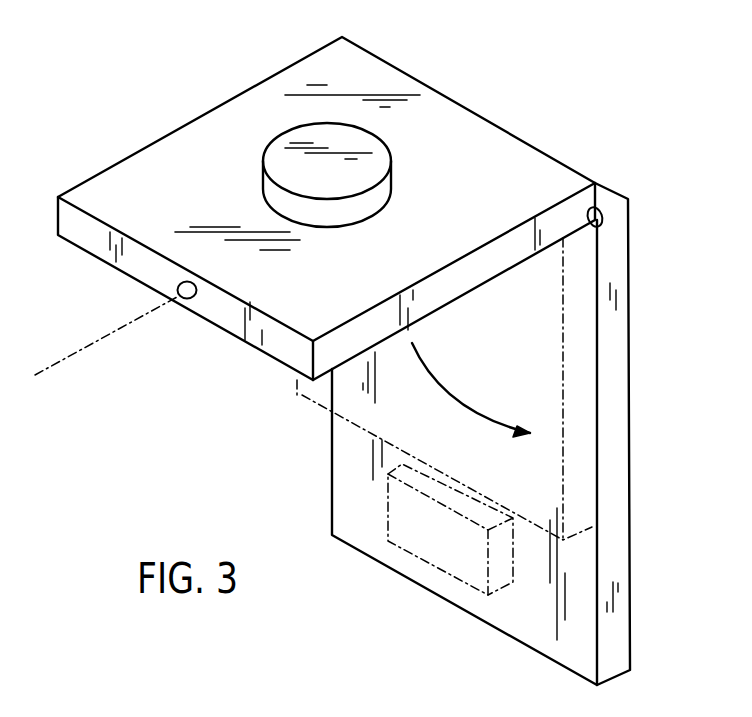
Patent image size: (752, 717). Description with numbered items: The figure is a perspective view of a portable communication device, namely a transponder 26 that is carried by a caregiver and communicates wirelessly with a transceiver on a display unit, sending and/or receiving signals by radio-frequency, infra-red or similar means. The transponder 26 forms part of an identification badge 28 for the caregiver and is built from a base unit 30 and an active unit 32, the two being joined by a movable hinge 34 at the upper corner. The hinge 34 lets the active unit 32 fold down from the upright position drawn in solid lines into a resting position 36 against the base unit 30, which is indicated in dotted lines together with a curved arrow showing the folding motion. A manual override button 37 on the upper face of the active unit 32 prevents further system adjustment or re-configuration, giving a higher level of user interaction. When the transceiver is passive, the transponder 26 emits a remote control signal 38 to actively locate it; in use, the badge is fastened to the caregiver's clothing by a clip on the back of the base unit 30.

The transponder 26 is at (463, 125).
The identification badge 28 is at (618, 367).
The base unit 30 is at (618, 438).
The active unit 32 is at (458, 226).
The movable hinge 34 is at (598, 208).
The resting position 36 is at (305, 392).
The manual override button 37 is at (333, 188).
The remote control signal 38 is at (110, 332).